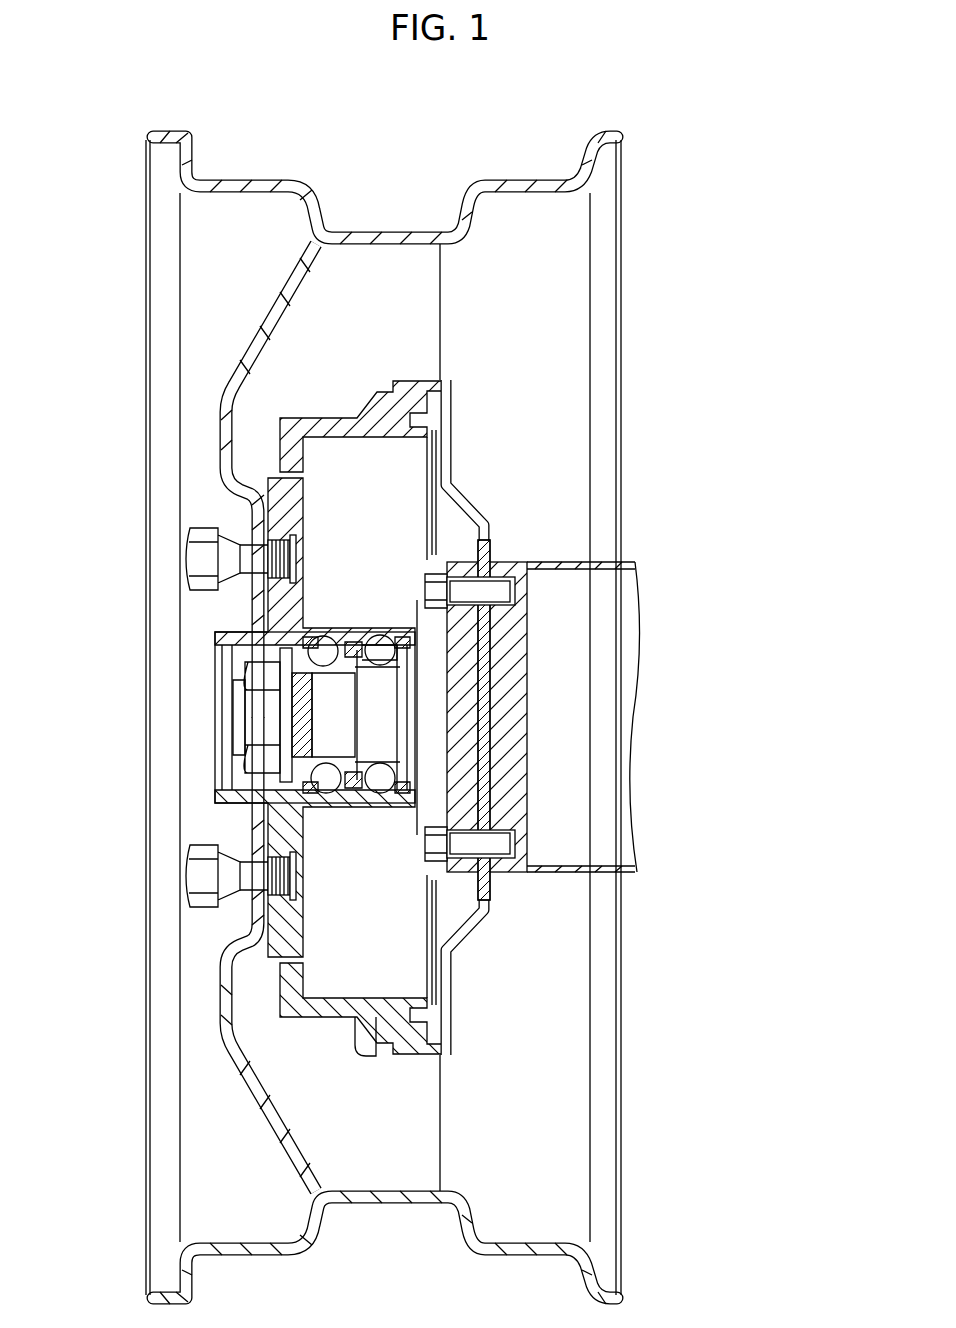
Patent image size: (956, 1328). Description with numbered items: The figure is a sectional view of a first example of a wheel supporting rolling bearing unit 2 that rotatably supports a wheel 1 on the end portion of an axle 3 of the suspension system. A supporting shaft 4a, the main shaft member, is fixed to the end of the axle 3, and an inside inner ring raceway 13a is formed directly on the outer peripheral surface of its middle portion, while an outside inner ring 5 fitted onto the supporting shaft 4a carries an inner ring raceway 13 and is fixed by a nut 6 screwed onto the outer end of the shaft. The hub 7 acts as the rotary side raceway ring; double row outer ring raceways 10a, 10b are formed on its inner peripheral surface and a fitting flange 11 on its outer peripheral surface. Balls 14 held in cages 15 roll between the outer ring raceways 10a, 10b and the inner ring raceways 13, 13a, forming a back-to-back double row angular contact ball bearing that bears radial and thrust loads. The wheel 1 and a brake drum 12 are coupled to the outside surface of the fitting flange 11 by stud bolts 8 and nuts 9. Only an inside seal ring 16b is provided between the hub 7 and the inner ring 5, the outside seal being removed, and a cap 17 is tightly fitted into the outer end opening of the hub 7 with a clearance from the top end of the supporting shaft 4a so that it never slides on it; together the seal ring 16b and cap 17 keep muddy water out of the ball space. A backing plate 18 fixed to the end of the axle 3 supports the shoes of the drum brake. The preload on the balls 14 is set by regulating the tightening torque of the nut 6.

The wheel 1 is at (312, 228).
The wheel supporting rolling bearing unit 2 is at (288, 670).
The axle 3 is at (557, 562).
The supporting shaft 4a is at (250, 712).
The inner ring 5 is at (342, 770).
The nut 6 is at (262, 750).
The hub 7 is at (243, 612).
The stud bolt 8 is at (243, 515).
The nut 9 is at (195, 558).
The outer ring raceway 10a is at (320, 630).
The outer ring raceway 10b is at (374, 632).
The fitting flange 11 is at (250, 918).
The drum 12 is at (318, 1014).
The inner ring raceway 13 is at (320, 798).
The inside inner ring raceway 13a is at (393, 798).
The ball 14 is at (322, 612).
The cage 15 is at (374, 668).
The inside seal ring 16b is at (427, 770).
The cap 17 is at (232, 684).
The backing plate 18 is at (481, 905).